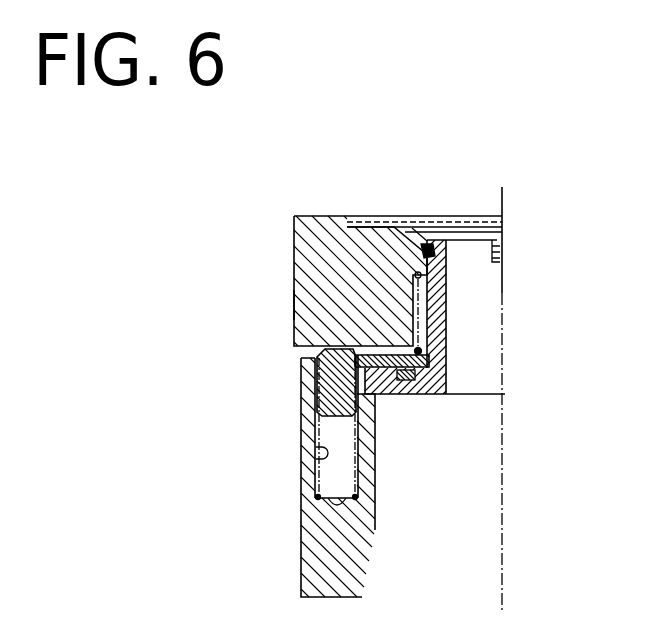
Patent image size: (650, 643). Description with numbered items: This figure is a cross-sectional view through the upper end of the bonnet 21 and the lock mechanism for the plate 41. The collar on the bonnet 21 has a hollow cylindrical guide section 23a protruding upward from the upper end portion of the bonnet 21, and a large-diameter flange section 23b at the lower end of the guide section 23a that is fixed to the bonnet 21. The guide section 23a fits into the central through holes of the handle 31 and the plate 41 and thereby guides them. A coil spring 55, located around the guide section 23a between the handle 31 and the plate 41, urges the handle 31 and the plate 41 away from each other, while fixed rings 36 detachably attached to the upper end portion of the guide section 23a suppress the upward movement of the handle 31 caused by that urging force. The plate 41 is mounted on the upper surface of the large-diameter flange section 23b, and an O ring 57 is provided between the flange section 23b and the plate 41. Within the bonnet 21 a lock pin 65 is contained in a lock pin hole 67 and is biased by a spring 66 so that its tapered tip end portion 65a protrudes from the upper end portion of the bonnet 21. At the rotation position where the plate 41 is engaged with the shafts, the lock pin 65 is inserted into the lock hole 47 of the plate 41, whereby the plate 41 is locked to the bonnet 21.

The bonnet 21 is at (320, 556).
The guide section 23a is at (447, 281).
The large-diameter flange section 23b is at (447, 375).
The handle 31 is at (338, 270).
The fixed rings 36 is at (427, 246).
The plate 41 is at (315, 360).
The lock hole 47 is at (318, 380).
The coil spring 55 is at (425, 352).
The O ring 57 is at (410, 385).
The lock pin 65 is at (316, 398).
The tip end portion 65a is at (298, 307).
The spring 66 is at (317, 487).
The lock pin hole 67 is at (320, 459).